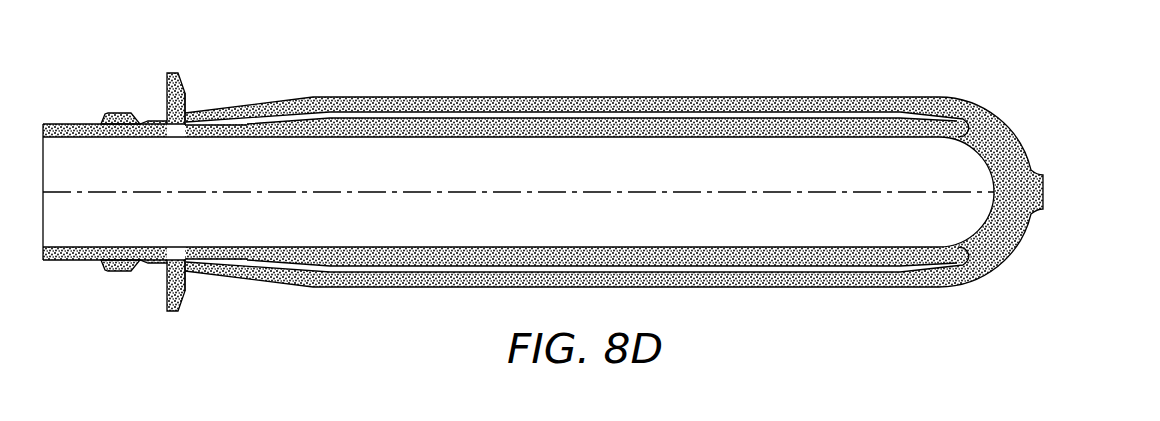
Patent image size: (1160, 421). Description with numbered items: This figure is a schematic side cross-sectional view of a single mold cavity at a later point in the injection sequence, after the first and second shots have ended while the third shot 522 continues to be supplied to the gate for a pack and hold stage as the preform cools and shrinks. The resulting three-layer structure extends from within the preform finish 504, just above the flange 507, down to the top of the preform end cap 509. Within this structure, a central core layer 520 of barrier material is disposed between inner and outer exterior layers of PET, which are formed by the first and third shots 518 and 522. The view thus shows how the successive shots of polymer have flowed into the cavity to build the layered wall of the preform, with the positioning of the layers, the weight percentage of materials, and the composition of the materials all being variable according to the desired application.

The preform finish 504 is at (167, 312).
The flange 507 is at (182, 297).
The preform end cap 509 is at (1000, 263).
The first shot 518 is at (118, 113).
The central core layer 520 is at (642, 118).
The third shot 522 is at (1015, 148).